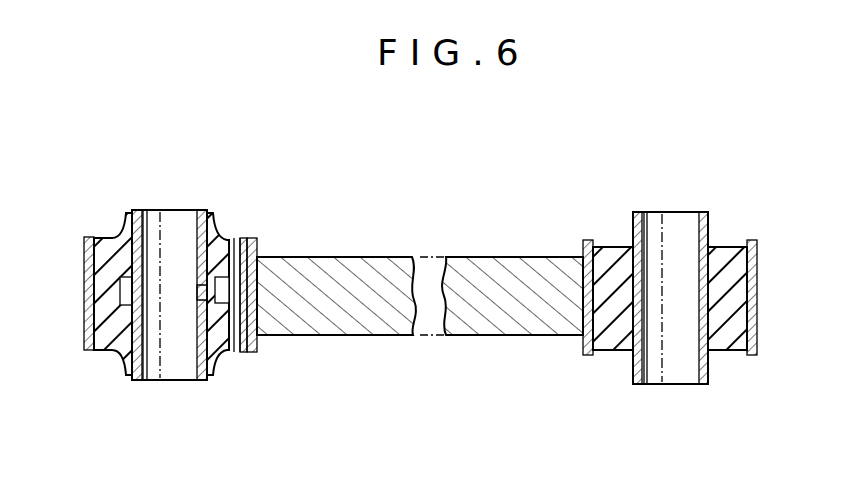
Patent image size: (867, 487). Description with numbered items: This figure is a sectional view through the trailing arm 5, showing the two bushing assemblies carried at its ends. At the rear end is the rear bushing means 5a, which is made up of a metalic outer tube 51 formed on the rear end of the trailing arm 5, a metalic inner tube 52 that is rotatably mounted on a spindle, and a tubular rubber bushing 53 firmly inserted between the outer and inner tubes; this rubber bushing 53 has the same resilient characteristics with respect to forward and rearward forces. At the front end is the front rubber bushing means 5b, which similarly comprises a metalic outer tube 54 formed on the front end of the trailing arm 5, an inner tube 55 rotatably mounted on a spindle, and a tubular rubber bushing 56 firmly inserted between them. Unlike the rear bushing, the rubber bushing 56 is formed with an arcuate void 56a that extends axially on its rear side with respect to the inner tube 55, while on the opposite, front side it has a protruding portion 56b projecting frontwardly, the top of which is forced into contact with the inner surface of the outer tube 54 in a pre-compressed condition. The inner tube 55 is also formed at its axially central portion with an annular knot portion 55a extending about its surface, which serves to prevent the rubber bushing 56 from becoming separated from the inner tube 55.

The trailing arm 5 is at (490, 257).
The rear bushing means 5a is at (687, 181).
The front rubber bushing means 5b is at (134, 186).
The metalic outer tube 51 is at (762, 250).
The metalic inner tube 52 is at (638, 212).
The tubular rubber bushing 53 is at (607, 250).
The metalic outer tube 54 is at (255, 238).
The inner tube 55 is at (203, 209).
The annular knot portion 55a is at (205, 292).
The tubular rubber bushing 56 is at (217, 237).
The arcuate void 56a is at (232, 342).
The protruding portion 56b is at (98, 290).